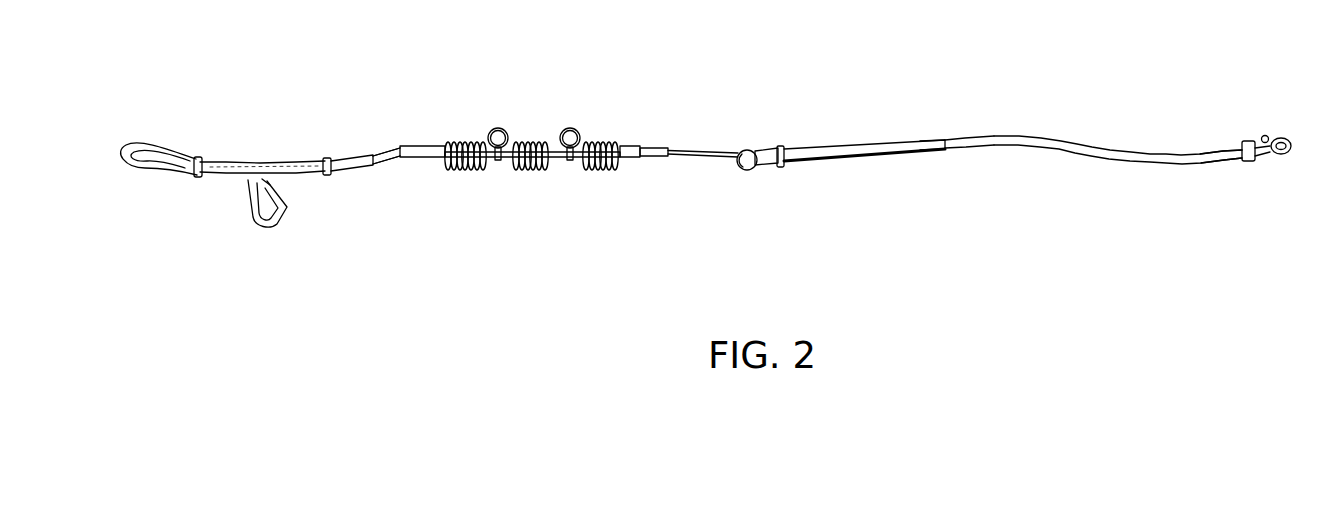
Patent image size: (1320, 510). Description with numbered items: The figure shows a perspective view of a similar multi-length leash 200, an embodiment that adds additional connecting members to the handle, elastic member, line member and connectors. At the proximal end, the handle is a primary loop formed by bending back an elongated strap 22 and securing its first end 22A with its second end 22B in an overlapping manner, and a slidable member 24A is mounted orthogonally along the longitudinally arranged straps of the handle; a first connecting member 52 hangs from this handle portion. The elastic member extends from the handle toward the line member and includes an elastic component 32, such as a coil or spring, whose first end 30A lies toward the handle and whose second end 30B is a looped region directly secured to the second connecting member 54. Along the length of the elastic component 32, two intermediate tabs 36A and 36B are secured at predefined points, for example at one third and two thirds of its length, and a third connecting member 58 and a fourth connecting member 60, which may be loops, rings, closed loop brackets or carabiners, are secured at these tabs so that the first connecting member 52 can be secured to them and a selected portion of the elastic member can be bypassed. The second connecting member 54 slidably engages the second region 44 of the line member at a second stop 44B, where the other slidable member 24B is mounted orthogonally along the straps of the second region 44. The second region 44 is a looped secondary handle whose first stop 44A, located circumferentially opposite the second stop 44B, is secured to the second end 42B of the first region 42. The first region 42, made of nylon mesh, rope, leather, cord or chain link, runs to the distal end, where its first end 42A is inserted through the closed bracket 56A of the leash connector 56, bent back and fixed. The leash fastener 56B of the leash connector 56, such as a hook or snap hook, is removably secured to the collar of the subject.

The similar multi-length leash 200 is at (1132, 130).
The elongated strap 22 is at (193, 158).
The first end of the strap 22A is at (393, 147).
The second end of the strap 22B is at (386, 156).
The slidable member 24A is at (199, 159).
The other slidable member 24B is at (783, 167).
The first connecting member 52 is at (248, 186).
The first end of the elastic member 30A is at (418, 158).
The second end of the elastic member 30B is at (735, 153).
The elastic component 32 is at (535, 170).
The intermediate tab 36A is at (498, 162).
The intermediate tab 36B is at (570, 162).
The third connecting member 58 is at (498, 128).
The fourth connecting member 60 is at (570, 128).
The second connecting member 54 is at (747, 172).
The second region 44 is at (848, 133).
The first stop 44A is at (922, 140).
The second stop 44B is at (763, 150).
The first region 42 is at (1048, 135).
The first end of the first region 42A is at (1217, 160).
The second end of the first region 42B is at (957, 138).
The leash connector 56 is at (1291, 122).
The closed bracket 56A is at (1252, 160).
The leash fastener 56B is at (1282, 135).